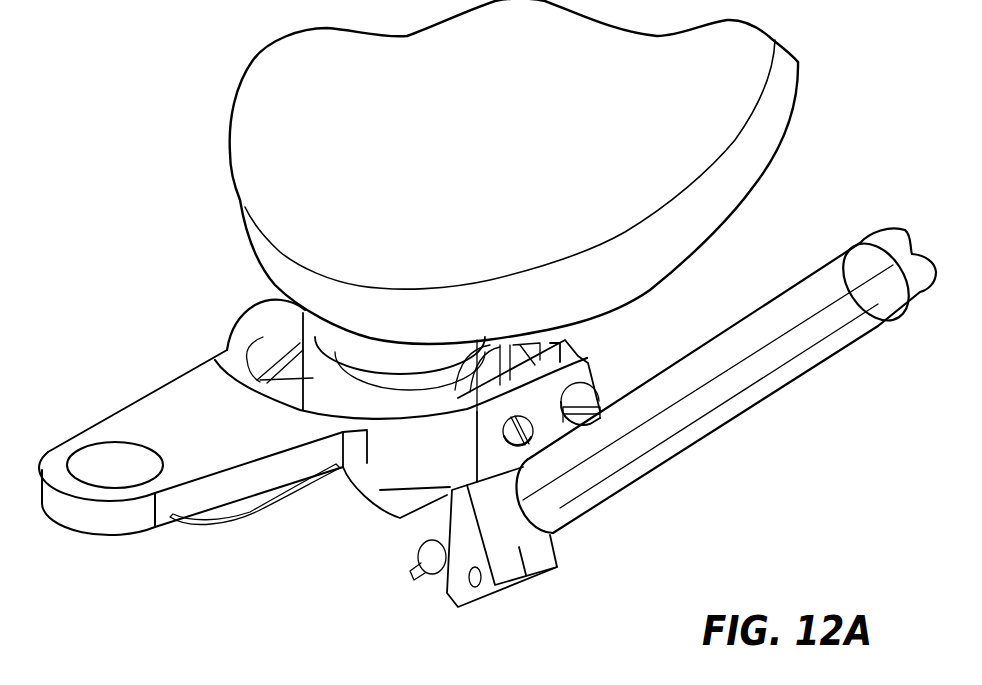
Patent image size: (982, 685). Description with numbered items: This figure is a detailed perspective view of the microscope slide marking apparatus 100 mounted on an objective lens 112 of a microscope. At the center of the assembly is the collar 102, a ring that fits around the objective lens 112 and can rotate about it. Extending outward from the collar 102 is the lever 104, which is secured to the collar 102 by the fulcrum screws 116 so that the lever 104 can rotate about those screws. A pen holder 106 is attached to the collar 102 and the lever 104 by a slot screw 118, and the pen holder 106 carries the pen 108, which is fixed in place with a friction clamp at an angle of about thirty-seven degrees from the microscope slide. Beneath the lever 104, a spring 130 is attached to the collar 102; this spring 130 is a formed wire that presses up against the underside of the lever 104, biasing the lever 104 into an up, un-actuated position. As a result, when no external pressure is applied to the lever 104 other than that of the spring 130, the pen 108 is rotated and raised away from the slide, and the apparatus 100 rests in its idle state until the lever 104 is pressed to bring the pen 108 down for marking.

The microscope slide marking apparatus 100 is at (240, 282).
The collar 102 is at (260, 382).
The lever 104 is at (100, 418).
The pen holder 106 is at (556, 572).
The pen 108 is at (718, 429).
The objective lens 112 is at (355, 343).
The fulcrum screws 116 is at (594, 388).
The slot screw 118 is at (497, 437).
The spring 130 is at (193, 530).